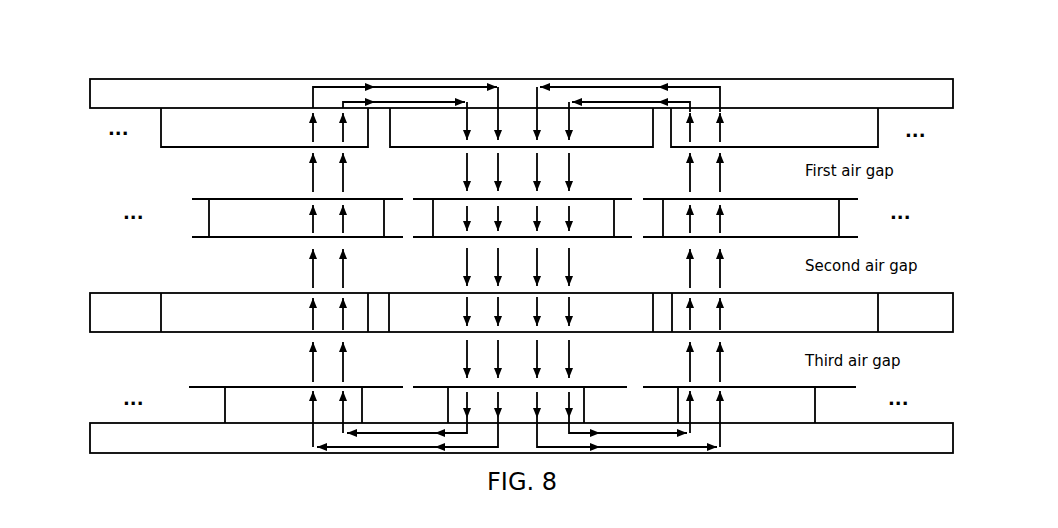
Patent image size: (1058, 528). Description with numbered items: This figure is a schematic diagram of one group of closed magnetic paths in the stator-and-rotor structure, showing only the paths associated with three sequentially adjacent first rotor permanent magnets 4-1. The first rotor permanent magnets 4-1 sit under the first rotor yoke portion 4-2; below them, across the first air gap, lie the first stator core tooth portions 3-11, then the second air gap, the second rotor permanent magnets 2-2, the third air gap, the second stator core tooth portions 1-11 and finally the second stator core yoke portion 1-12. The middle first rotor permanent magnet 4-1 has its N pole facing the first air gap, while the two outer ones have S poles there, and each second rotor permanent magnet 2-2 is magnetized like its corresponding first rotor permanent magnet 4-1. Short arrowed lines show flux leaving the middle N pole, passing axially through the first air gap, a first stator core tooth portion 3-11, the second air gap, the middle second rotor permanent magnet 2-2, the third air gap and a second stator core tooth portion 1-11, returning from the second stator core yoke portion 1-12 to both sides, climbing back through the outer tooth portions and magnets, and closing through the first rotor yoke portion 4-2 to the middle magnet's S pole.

The first rotor yoke portion 4-2 is at (137, 93).
The first rotor permanent magnet 4-1 is at (185, 134).
The first stator core tooth portion 3-11 is at (225, 216).
The second rotor permanent magnet 2-2 is at (185, 307).
The second stator core tooth portion 1-11 is at (248, 410).
The second stator core yoke portion 1-12 is at (137, 448).